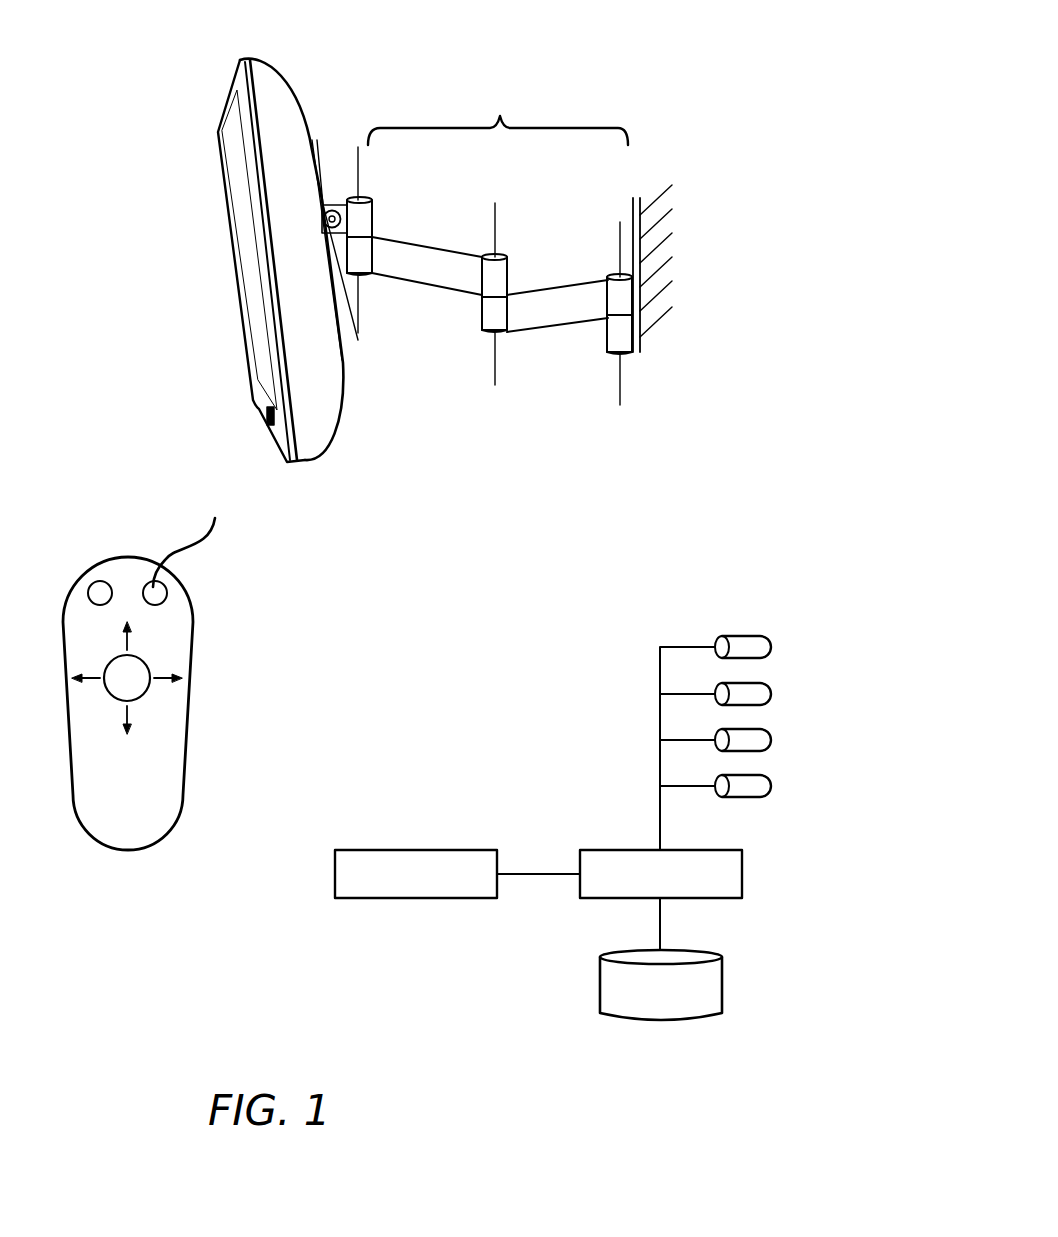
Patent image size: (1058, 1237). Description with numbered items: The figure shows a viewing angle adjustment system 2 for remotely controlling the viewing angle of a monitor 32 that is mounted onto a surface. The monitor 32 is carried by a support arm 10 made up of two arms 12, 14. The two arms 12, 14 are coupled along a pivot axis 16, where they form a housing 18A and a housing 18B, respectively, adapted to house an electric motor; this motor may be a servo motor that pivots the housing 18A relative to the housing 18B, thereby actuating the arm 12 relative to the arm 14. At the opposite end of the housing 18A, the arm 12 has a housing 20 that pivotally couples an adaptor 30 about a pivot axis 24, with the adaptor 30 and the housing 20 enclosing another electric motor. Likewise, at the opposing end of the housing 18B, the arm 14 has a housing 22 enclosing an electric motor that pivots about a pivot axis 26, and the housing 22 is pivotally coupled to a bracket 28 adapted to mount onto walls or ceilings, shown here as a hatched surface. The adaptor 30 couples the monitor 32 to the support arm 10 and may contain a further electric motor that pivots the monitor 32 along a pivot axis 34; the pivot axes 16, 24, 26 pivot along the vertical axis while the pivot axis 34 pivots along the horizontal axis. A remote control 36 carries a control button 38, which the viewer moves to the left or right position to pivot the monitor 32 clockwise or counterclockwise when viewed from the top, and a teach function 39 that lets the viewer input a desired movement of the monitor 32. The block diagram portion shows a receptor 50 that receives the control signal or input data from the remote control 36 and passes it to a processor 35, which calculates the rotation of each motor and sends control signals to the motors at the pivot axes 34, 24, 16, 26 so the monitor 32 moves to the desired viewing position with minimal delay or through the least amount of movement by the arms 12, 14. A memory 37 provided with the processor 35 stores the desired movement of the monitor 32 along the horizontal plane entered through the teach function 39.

The viewing angle adjustment system 2 is at (688, 87).
The support arm 10 is at (500, 117).
The arm 12 is at (453, 275).
The arm 14 is at (558, 310).
The pivot axis 16 is at (495, 358).
The housing 18A is at (500, 273).
The housing 18B is at (500, 313).
The housing 20 is at (358, 257).
The housing 22 is at (620, 293).
The pivot axis 24 is at (358, 172).
The pivot axis 26 is at (622, 378).
The bracket 28 is at (636, 228).
The adaptor 30 is at (331, 207).
The monitor 32 is at (243, 58).
The pivot axis 34 is at (325, 190).
The processor 35 is at (743, 872).
The remote control 36 is at (183, 813).
The memory 37 is at (723, 985).
The control button 38 is at (127, 680).
The teach function 39 is at (100, 590).
The receptor 50 is at (272, 417).